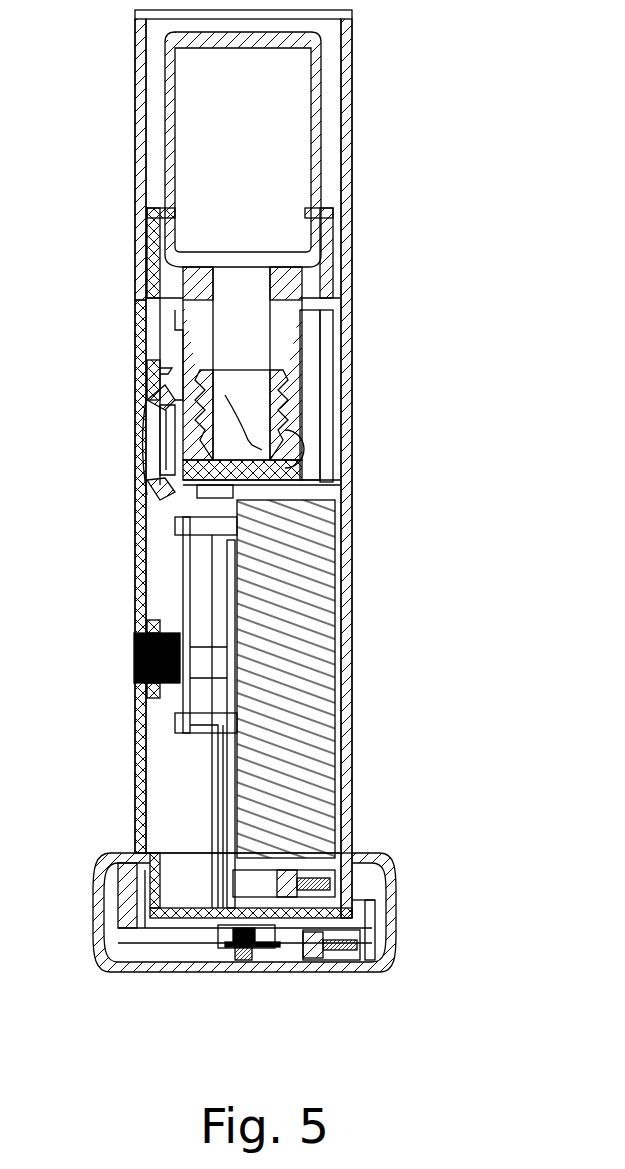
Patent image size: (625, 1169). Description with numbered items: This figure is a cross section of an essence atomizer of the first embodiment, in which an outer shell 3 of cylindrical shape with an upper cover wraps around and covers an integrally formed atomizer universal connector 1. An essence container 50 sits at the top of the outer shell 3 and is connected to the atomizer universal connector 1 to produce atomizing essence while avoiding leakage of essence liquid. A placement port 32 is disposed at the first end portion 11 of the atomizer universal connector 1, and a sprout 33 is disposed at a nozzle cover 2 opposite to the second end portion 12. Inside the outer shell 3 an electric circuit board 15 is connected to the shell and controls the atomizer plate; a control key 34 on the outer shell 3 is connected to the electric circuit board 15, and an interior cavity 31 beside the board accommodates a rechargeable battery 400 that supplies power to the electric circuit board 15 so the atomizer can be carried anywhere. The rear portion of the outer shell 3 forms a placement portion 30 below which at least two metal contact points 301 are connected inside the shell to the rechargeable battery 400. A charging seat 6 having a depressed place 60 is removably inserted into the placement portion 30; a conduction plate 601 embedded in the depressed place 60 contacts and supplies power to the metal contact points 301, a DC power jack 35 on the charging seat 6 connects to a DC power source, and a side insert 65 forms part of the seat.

The atomizer universal connector 1 is at (300, 390).
The nozzle cover 2 is at (140, 492).
The outer shell 3 is at (352, 805).
The charging seat 6 is at (97, 905).
The first end portion 11 is at (165, 380).
The second end portion 12 is at (330, 503).
The electric circuit board 15 is at (187, 558).
The placement portion 30 is at (187, 918).
The accommodating cavity 31 is at (167, 792).
The placement port 32 is at (148, 283).
The sprout 33 is at (148, 430).
The control key 34 is at (134, 662).
The DC power jack 35 is at (333, 888).
The essence container 50 is at (190, 152).
The depressed place 60 is at (162, 918).
The cap insert 65 is at (370, 967).
The metal contact points 301 is at (267, 917).
The rechargeable battery 400 is at (305, 707).
The conduction plate 601 is at (257, 927).